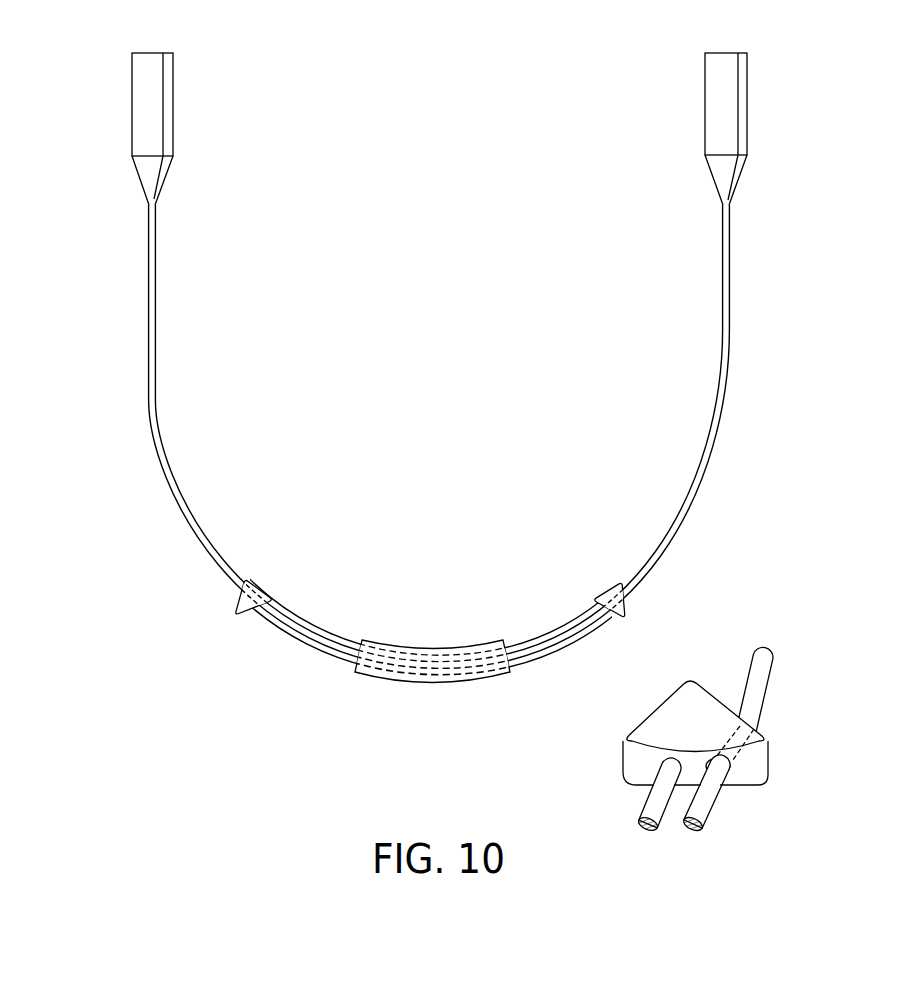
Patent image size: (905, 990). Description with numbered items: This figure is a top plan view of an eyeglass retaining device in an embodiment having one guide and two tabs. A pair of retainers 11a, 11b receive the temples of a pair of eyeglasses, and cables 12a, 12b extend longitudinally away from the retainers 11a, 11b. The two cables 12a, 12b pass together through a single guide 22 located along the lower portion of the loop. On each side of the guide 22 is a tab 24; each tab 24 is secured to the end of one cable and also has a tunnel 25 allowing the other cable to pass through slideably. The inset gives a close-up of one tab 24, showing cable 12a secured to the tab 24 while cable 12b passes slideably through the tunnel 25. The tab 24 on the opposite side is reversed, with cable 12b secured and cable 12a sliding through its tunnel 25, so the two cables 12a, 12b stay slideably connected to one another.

The retainer 11a is at (754, 105).
The retainer 11b is at (126, 100).
The cable 12a is at (728, 276).
The cable 12b is at (150, 277).
The guide 22 is at (433, 648).
The tab 24 is at (256, 588).
The tunnel 25 is at (731, 772).